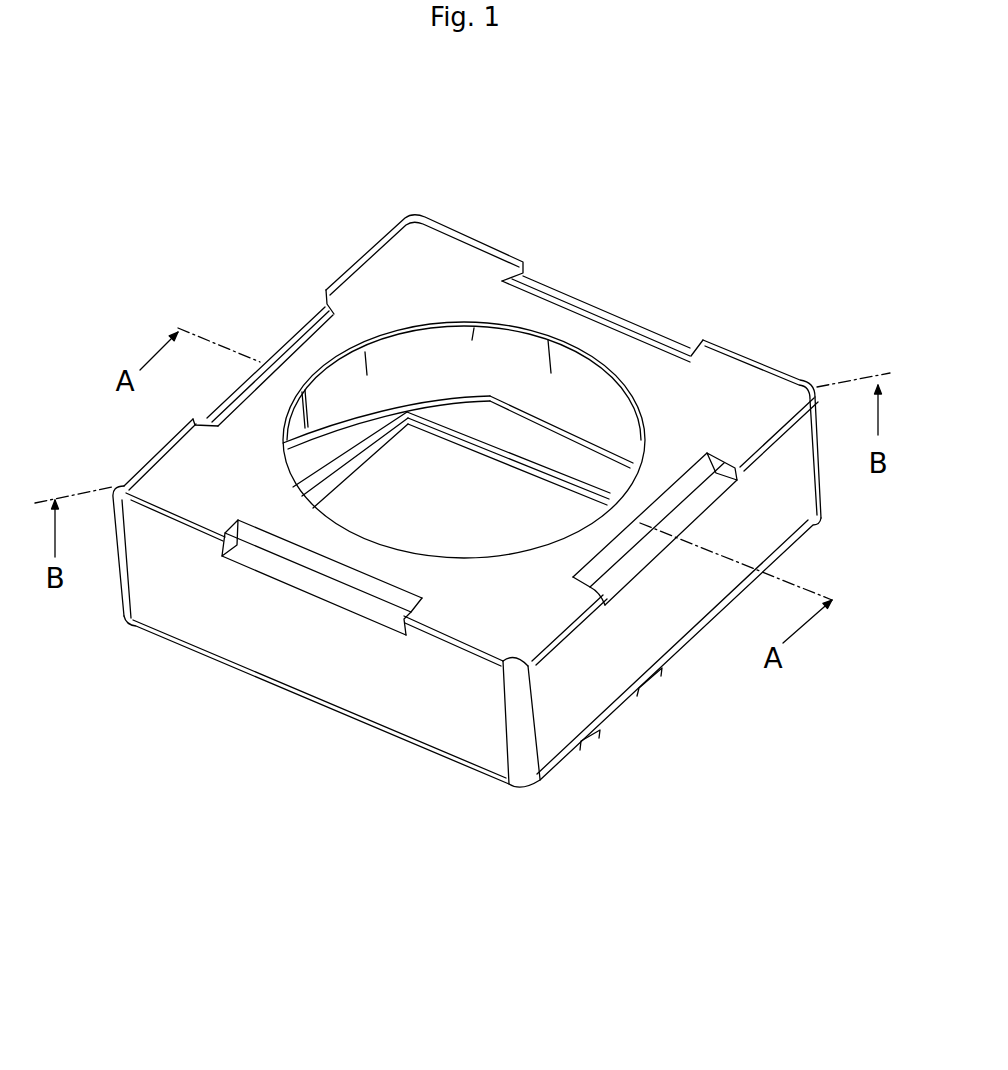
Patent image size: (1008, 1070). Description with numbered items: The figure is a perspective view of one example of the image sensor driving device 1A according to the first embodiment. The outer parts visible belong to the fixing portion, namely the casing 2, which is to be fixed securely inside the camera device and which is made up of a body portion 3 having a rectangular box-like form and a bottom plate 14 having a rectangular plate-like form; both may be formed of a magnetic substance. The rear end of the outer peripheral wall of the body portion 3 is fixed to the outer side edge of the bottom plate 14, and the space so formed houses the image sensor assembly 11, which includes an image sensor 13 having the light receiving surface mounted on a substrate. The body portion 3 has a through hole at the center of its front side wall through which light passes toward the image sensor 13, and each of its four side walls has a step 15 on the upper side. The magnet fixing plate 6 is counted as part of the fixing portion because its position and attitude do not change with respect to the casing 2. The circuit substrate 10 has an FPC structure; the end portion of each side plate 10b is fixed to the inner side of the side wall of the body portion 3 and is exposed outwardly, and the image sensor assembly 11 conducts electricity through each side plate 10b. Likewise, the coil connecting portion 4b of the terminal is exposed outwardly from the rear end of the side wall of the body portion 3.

The image sensor driving device 1A is at (157, 159).
The casing 2 is at (443, 216).
The body portion 3 is at (397, 250).
The magnet fixing plate 6 is at (457, 360).
The step 15 is at (287, 356).
The circuit substrate 10 is at (585, 373).
The image sensor assembly 11 is at (418, 517).
The image sensor 13 is at (490, 510).
The side plate 10b is at (600, 736).
The coil connecting portion 4b is at (657, 677).
The bottom plate 14 is at (687, 647).